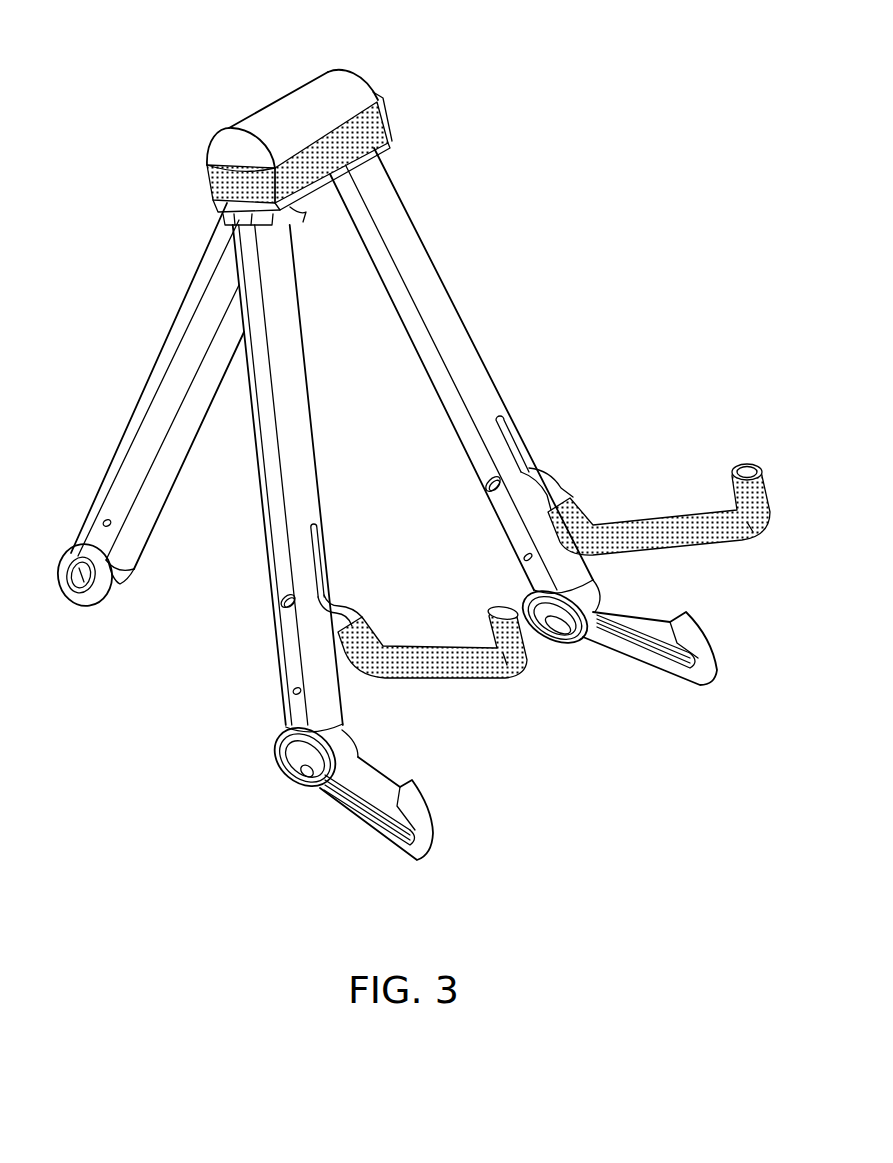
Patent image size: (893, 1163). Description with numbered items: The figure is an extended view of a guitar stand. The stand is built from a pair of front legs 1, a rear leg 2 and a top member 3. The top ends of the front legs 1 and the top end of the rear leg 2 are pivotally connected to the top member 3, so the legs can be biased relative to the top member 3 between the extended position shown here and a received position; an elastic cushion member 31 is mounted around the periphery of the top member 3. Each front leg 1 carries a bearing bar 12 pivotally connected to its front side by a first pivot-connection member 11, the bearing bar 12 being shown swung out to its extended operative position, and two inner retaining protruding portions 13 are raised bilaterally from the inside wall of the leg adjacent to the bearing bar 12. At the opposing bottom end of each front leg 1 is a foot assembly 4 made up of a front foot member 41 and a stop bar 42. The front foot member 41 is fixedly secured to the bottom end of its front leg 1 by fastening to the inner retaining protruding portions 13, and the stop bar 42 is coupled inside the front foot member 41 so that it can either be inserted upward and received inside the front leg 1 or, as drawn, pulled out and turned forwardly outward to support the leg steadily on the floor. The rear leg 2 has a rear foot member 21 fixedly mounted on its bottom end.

The front legs 1 is at (495, 440).
The rear leg 2 is at (149, 445).
The top member 3 is at (330, 113).
The foot assembly 4 is at (458, 714).
The first pivot-connection member 11 is at (281, 604).
The bearing bar 12 is at (444, 645).
The inner retaining protruding portions 13 is at (292, 694).
The rear foot member 21 is at (119, 588).
The elastic cushion member 31 is at (390, 118).
The front foot member 41 is at (276, 741).
The stop bar 42 is at (372, 778).